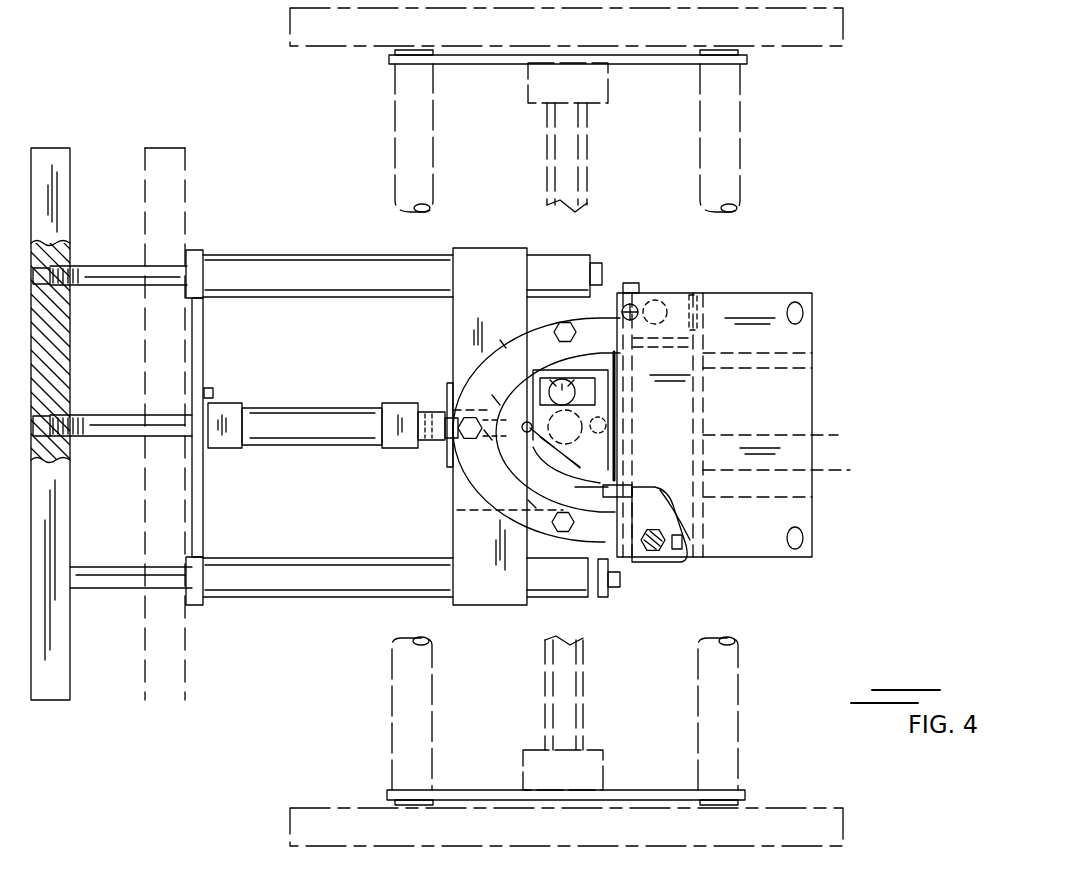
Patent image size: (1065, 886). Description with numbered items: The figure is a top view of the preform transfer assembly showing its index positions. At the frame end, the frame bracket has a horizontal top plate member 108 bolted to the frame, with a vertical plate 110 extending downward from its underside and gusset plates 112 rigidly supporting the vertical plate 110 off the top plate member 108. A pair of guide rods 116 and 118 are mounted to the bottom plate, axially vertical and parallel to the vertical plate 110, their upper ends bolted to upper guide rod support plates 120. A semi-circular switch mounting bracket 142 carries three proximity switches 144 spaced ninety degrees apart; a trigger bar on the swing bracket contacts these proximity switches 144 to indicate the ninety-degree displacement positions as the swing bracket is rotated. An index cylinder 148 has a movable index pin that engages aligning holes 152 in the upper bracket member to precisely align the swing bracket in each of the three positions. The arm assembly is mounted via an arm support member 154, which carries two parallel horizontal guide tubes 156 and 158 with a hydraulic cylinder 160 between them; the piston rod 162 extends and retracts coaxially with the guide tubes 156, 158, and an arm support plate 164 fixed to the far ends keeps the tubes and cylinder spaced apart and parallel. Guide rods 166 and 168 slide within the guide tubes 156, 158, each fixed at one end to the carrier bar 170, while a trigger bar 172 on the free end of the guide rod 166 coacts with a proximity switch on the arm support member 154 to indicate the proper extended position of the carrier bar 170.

The horizontal top plate member 108 is at (813, 338).
The vertical plate 110 is at (794, 435).
The gusset plates 112 is at (757, 370).
The guide rod 116 is at (677, 550).
The guide rod 118 is at (660, 300).
The upper guide rod support plates 120 is at (690, 300).
The switch mounting bracket 142 is at (470, 358).
The proximity switches 144 is at (568, 320).
The index cylinder 148 is at (538, 378).
The aligning holes 152 is at (528, 430).
The arm support member 154 is at (495, 247).
The guide tube 156 is at (307, 598).
The guide tube 158 is at (261, 254).
The hydraulic cylinder 160 is at (312, 403).
The piston rod 162 is at (97, 415).
The arm support plate 164 is at (206, 338).
The guide rod 166 is at (105, 565).
The guide rod 168 is at (100, 265).
The carrier bar 170 is at (44, 703).
The trigger bar 172 is at (608, 590).